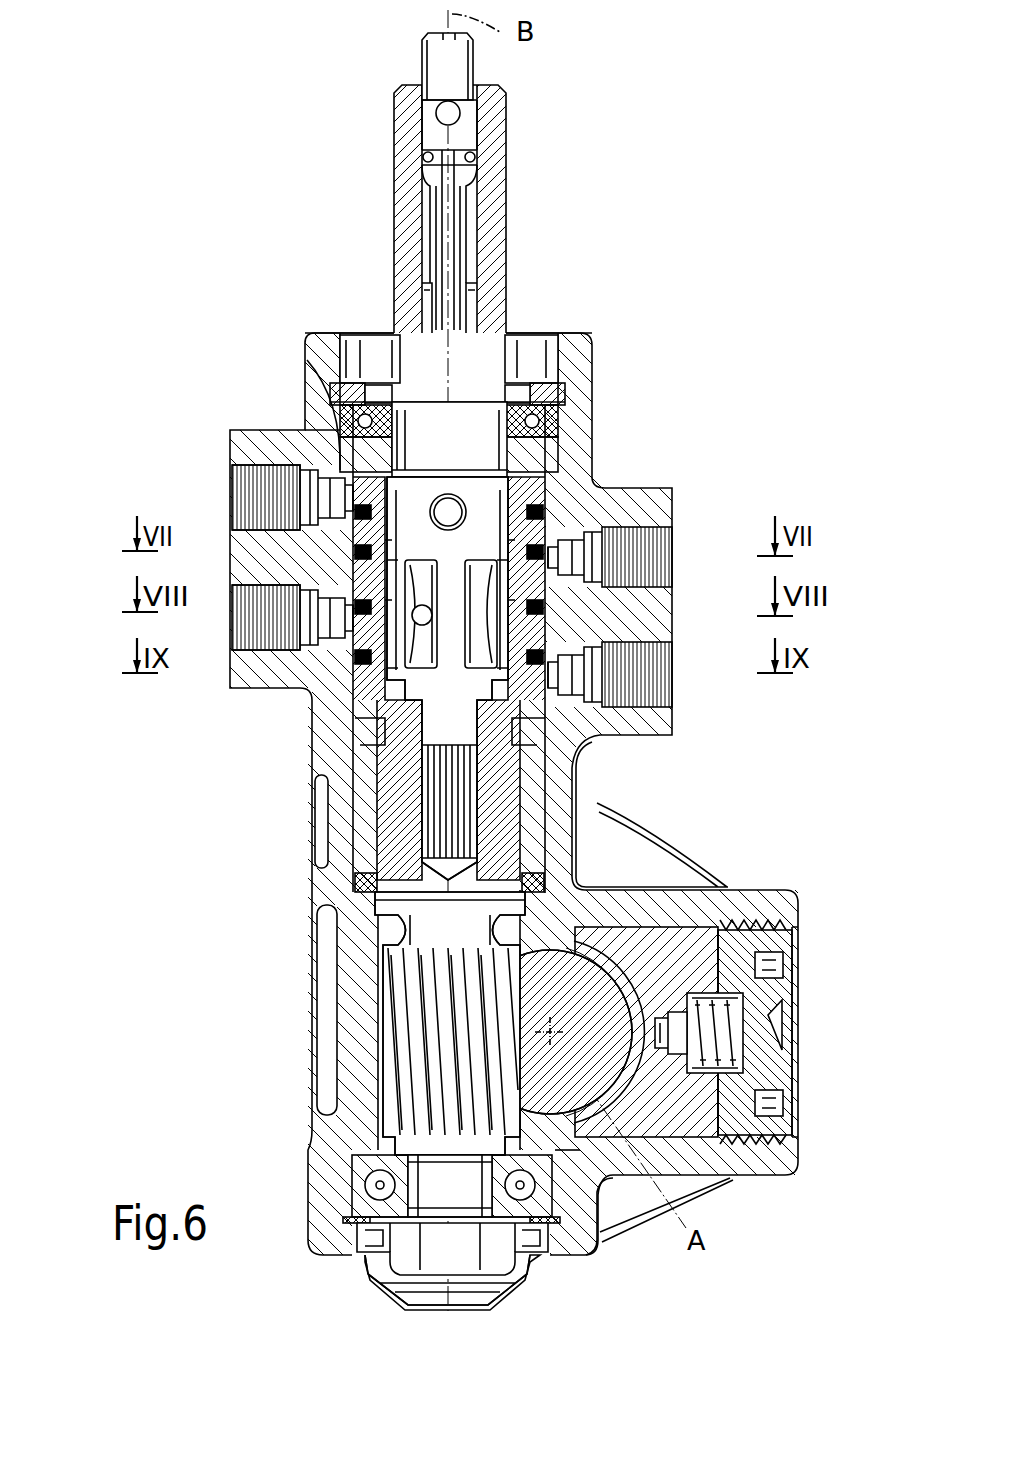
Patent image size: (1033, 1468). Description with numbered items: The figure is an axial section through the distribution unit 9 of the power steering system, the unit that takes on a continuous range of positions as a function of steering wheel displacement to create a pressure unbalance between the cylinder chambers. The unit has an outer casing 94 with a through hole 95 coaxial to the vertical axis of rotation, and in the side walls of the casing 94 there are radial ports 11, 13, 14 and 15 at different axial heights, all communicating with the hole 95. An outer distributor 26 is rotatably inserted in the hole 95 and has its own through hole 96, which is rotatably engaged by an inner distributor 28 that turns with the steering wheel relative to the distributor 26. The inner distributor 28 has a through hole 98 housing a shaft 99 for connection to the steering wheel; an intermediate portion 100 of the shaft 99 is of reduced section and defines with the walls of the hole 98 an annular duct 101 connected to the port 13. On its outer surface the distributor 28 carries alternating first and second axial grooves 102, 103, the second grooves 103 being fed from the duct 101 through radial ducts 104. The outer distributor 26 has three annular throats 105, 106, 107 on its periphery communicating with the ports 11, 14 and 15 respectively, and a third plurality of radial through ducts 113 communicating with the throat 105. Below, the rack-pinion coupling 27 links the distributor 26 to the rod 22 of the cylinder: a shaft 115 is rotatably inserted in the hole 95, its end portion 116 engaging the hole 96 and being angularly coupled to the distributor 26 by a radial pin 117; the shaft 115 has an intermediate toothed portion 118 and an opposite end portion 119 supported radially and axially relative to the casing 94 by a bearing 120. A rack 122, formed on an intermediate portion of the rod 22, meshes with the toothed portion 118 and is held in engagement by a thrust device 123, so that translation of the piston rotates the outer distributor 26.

The distribution unit 9 is at (729, 142).
The port 11 is at (265, 630).
The port 13 is at (280, 483).
The port 14 is at (642, 535).
The port 15 is at (648, 698).
The rod 22 is at (600, 945).
The outer distributor 26 is at (512, 558).
The rack-pinion coupling 27 is at (558, 1152).
The inner distributor 28 is at (515, 535).
The outer casing 94 is at (273, 458).
The through hole 95 is at (372, 338).
The through hole 96 is at (353, 350).
The through hole 98 is at (500, 245).
The shaft 99 is at (466, 132).
The intermediate portion 100 is at (443, 280).
The annular duct 101 is at (466, 218).
The first axial grooves 102 is at (352, 690).
The second axial grooves 103 is at (366, 650).
The radial ducts 104 is at (372, 660).
The annular throat 105 is at (352, 553).
The annular throat 106 is at (340, 505).
The annular throat 107 is at (395, 748).
The third radial through ducts 113 is at (412, 618).
The shaft 115 is at (400, 860).
The end portion 116 is at (410, 808).
The radial pin 117 is at (358, 850).
The intermediate toothed portion 118 is at (415, 1072).
The end portion 119 is at (435, 1174).
The bearing 120 is at (368, 1200).
The rack 122 is at (715, 958).
The thrust device 123 is at (806, 1035).